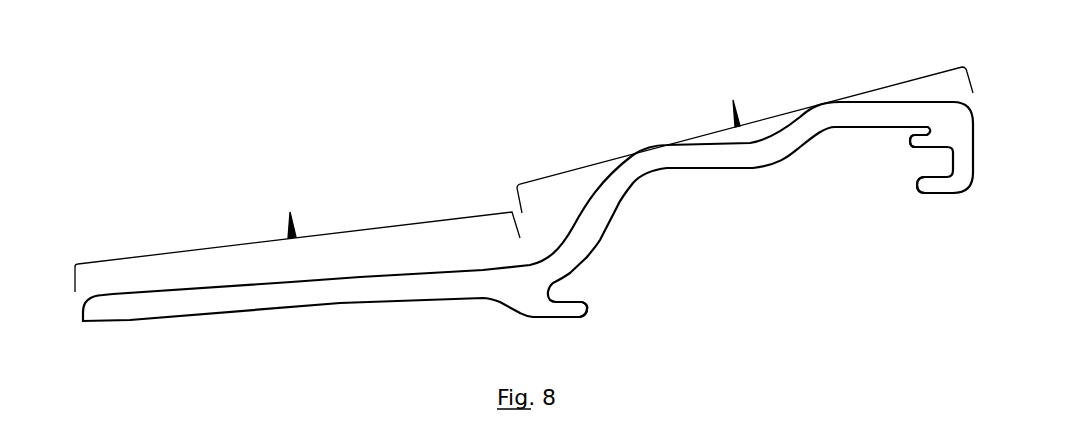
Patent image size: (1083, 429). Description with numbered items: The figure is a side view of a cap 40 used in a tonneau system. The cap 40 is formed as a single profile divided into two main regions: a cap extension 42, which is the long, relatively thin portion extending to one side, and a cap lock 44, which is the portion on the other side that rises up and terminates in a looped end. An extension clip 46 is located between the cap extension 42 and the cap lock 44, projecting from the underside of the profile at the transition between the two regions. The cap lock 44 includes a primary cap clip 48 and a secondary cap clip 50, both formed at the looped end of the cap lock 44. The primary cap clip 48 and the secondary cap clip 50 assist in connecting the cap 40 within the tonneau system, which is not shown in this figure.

The cap 40 is at (500, 165).
The cap extension 42 is at (297, 228).
The cap lock 44 is at (745, 134).
The extension clip 46 is at (585, 312).
The primary cap clip 48 is at (918, 185).
The secondary cap clip 50 is at (910, 140).